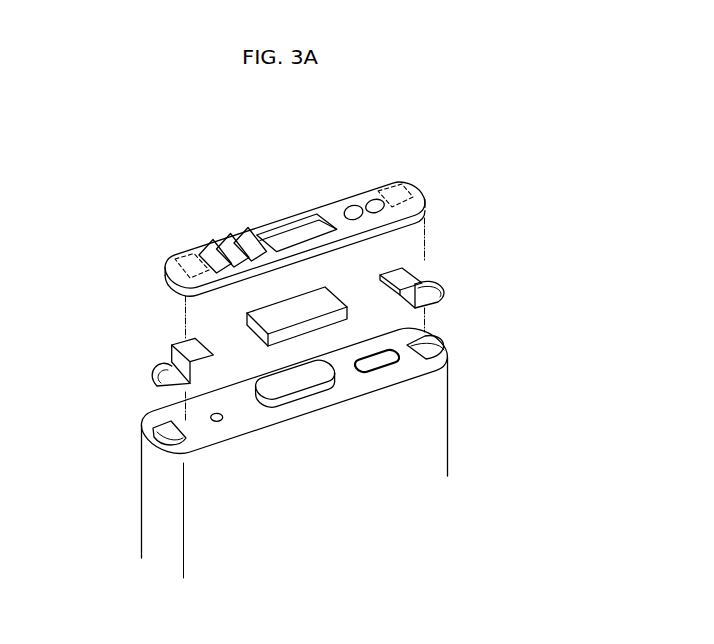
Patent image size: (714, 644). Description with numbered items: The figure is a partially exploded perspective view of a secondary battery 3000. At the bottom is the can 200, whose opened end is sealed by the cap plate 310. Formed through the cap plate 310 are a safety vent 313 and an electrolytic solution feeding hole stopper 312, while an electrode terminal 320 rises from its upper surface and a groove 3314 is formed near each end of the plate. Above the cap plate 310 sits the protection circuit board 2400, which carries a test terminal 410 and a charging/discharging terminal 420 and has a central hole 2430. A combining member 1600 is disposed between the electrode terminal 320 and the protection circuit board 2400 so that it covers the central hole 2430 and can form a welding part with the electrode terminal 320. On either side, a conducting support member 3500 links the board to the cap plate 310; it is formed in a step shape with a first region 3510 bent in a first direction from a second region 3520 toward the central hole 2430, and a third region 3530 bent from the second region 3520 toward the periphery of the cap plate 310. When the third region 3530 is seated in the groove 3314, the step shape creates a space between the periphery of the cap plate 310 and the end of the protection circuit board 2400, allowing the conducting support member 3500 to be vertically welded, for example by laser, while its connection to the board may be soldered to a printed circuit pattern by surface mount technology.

The secondary battery 3000 is at (104, 144).
The protection circuit board 2400 is at (164, 254).
The charging/discharging terminal 420 is at (242, 237).
The central hole 2430 is at (293, 233).
The test terminal 410 is at (373, 200).
The combining member 1600 is at (331, 289).
The conducting support member 3500 is at (445, 277).
The first region 3510 is at (185, 352).
The second region 3520 is at (178, 357).
The third region 3530 is at (167, 378).
The can 200 is at (448, 438).
The cap plate 310 is at (257, 420).
The groove 3314 is at (433, 343).
The electrode terminal 320 is at (300, 388).
The safety vent 313 is at (383, 372).
The electrolytic solution feeding hole stopper 312 is at (218, 423).